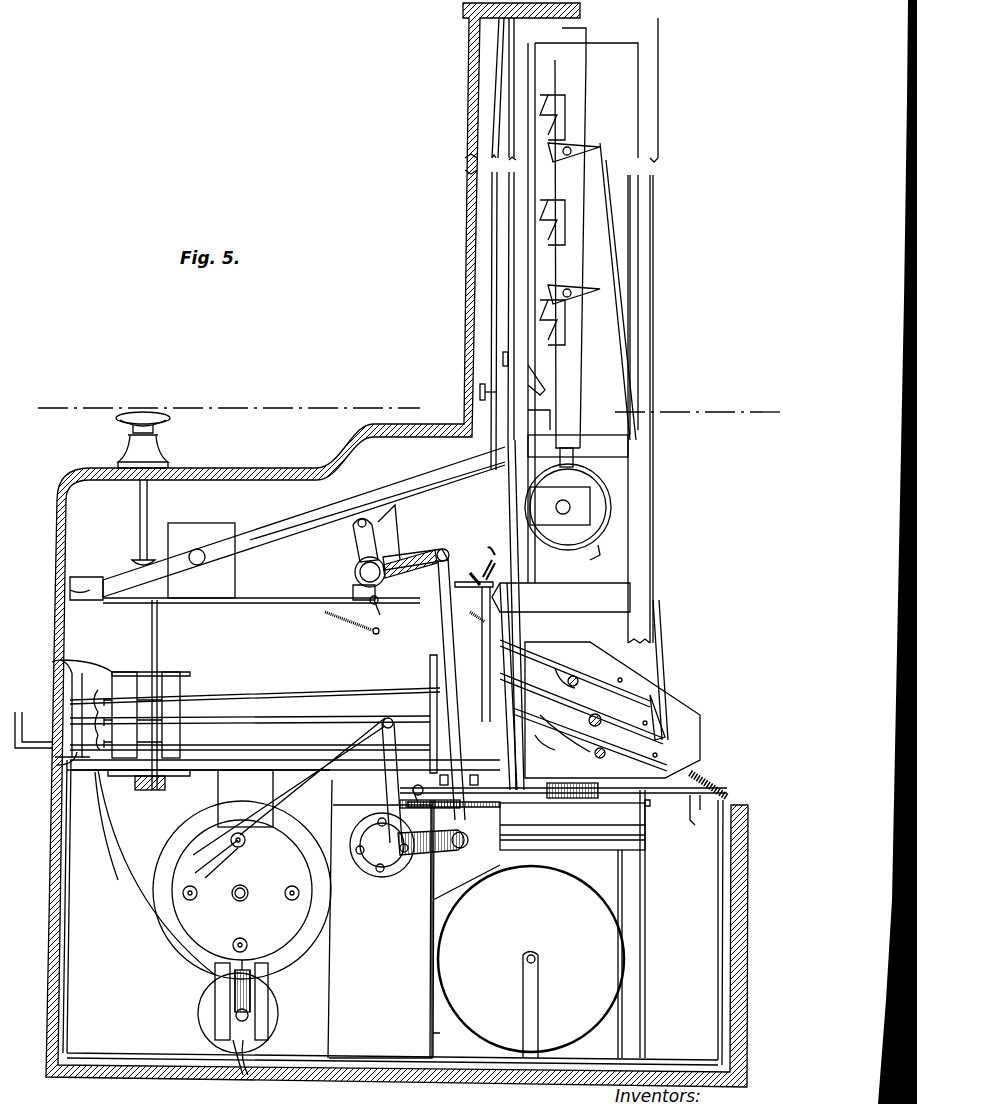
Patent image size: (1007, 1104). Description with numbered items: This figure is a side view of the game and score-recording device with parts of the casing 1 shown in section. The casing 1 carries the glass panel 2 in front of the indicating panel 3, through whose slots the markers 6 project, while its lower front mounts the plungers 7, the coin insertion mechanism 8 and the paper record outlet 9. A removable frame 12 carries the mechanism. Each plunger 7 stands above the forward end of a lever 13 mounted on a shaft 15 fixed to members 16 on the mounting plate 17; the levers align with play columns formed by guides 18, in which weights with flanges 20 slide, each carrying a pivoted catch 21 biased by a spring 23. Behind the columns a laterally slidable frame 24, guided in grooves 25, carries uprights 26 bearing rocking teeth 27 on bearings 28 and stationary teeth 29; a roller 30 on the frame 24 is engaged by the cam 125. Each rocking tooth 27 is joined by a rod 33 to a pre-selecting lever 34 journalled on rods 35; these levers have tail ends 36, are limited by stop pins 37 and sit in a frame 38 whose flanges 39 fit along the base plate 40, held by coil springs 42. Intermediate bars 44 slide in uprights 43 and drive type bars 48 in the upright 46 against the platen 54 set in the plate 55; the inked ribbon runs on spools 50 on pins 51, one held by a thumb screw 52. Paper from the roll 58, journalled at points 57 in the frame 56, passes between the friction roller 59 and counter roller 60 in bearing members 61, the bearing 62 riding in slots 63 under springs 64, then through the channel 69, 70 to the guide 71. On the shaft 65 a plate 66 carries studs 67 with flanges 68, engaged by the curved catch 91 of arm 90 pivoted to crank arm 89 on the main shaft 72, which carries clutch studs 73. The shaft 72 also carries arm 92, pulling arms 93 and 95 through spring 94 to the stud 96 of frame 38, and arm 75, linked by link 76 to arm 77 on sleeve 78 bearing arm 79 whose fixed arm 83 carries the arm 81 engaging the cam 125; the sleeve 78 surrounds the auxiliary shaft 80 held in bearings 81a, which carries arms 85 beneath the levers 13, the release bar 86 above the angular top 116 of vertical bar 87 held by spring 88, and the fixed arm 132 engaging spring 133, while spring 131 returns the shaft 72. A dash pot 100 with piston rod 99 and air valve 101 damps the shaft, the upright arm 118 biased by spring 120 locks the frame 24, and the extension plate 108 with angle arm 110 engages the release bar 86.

The casing 1 is at (468, 97).
The glass panel 2 is at (470, 145).
The indicating panel 3 is at (478, 215).
The pointer or marker 6 is at (480, 387).
The plunger 7 is at (128, 415).
The coin insertion mechanism 8 is at (25, 735).
The paper record outlet 9 is at (52, 665).
The frame 12 is at (640, 30).
The lever 13 is at (273, 527).
The shaft 15 is at (197, 550).
The bearing member 16 is at (235, 562).
The mounting plate 17 is at (285, 605).
The guide 18 is at (497, 246).
The projecting flange 20 is at (503, 360).
The catch 21 is at (548, 392).
The spring 23 is at (542, 412).
The frame 24 is at (580, 447).
The groove 25 is at (580, 452).
The upright 26 is at (575, 68).
The rocking tooth 27 is at (592, 142).
The bearing 28 is at (572, 152).
The stationary tooth 29 is at (551, 206).
The roller 30 is at (598, 466).
The rod or wire 33 is at (625, 258).
The pre-selecting lever 34 is at (618, 752).
The journal rod 35 is at (560, 683).
The tail end 36 is at (656, 705).
The stop pin 37 is at (620, 678).
The frame 38 is at (690, 718).
The flange 39 is at (698, 806).
The base plate 40 is at (338, 772).
The coil spring 42 is at (725, 785).
The upright 43 is at (430, 668).
The intermediate bar 44 is at (310, 745).
The upright 46 is at (125, 672).
The type bar 48 is at (99, 712).
The spool 50 is at (185, 674).
The post or pin 51 is at (160, 648).
The thumb screw 52 is at (160, 790).
The platen 54 is at (60, 760).
The upright plate 55 is at (67, 898).
The frame 56 is at (523, 1012).
The journal point 57 is at (540, 958).
The paper roll 58 is at (612, 938).
The friction roller 59 is at (302, 842).
The counter roller 60 is at (278, 1012).
The bearing member 61 is at (220, 794).
The bearing 62 is at (236, 1015).
The slot 63 is at (238, 1076).
The spring 64 is at (268, 990).
The shaft 65 is at (248, 898).
The plate 66 is at (185, 923).
The stud 67 is at (238, 848).
The flange 68 is at (246, 843).
The channel 69 is at (110, 870).
The channel 70 is at (95, 800).
The paper guide 71 is at (97, 660).
The main shaft 72 is at (360, 842).
The stud 73 is at (385, 826).
The arm 75 is at (443, 855).
The link 76 is at (445, 628).
The arm 77 is at (440, 548).
The sleeve 78 is at (355, 568).
The arm 79 is at (357, 540).
The auxiliary shaft 80 is at (378, 616).
The arm 81 is at (455, 503).
The bearing 81a is at (353, 588).
The fixed arm 83 is at (360, 519).
The fixed arm 85 is at (388, 545).
The release bar 86 is at (475, 575).
The vertical bar 87 is at (486, 660).
The spring 88 is at (492, 560).
The crank arm 89 is at (395, 735).
The arm 90 is at (295, 795).
The curved catch 91 is at (238, 830).
The arm 92 is at (415, 790).
The horizontal arm 93 is at (528, 794).
The coiled spring 94 is at (572, 801).
The extension arm 95 is at (620, 794).
The stud 96 is at (693, 843).
The piston rod 99 is at (488, 808).
The dash pot 100 is at (605, 842).
The air valve 101 is at (661, 819).
The extension plate 108 is at (362, 771).
The angle arm 110 is at (475, 767).
The angular top portion 116 is at (472, 588).
The upright arm 118 is at (520, 633).
The spring 120 is at (563, 500).
The cam 125 is at (605, 557).
The spring 131 is at (476, 843).
The fixed arm 132 is at (379, 633).
The spring 133 is at (333, 620).